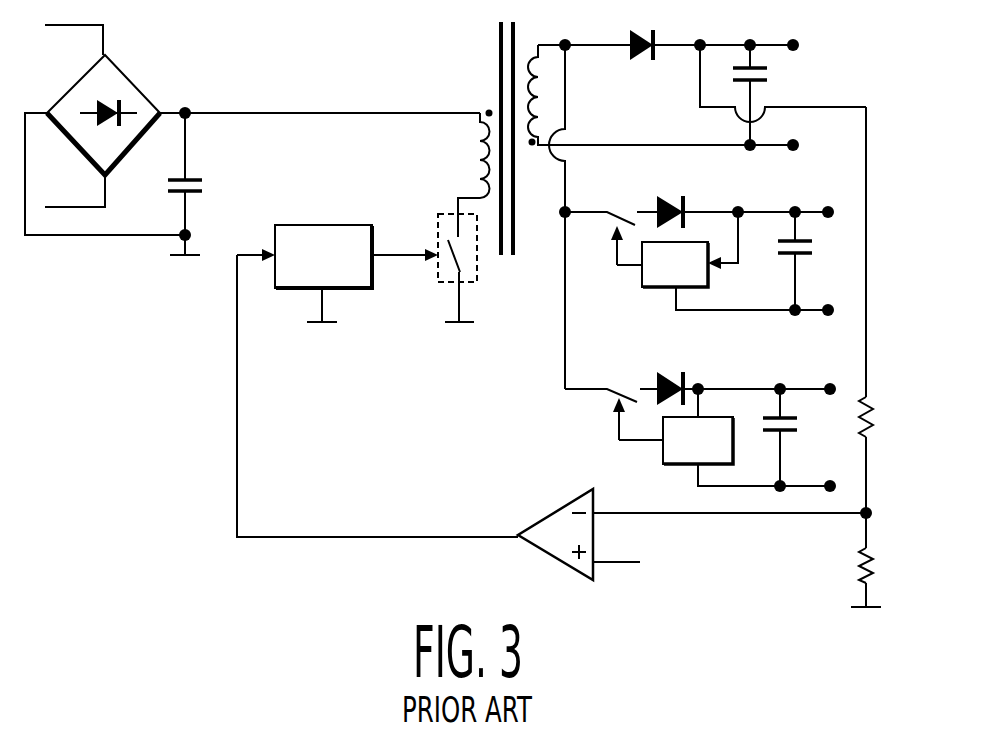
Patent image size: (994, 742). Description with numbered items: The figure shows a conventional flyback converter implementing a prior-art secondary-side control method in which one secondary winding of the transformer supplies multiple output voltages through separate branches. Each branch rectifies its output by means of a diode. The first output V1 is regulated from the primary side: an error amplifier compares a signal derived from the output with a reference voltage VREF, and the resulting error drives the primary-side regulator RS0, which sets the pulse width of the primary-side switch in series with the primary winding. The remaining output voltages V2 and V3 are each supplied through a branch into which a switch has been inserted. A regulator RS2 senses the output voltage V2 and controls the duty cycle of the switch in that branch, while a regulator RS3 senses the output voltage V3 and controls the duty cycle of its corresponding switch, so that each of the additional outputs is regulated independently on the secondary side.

The regulator for primary-side switch RS0 is at (323, 273).
The regulator for output V2 RS2 is at (675, 264).
The regulator for output V3 RS3 is at (698, 440).
The first output voltage V1 is at (764, 95).
The second output voltage V2 is at (808, 261).
The third output voltage V3 is at (795, 437).
The reference voltage VREF is at (637, 568).